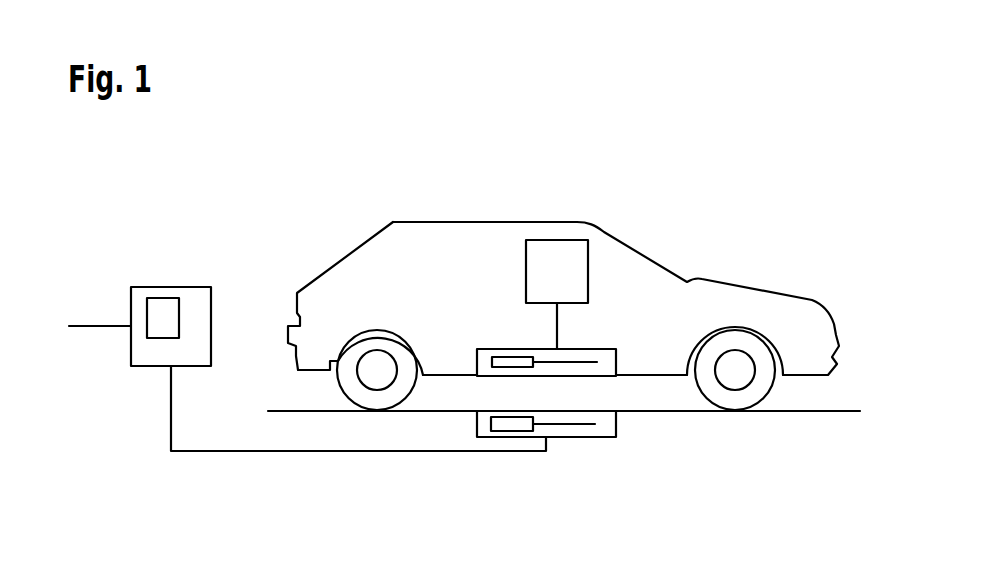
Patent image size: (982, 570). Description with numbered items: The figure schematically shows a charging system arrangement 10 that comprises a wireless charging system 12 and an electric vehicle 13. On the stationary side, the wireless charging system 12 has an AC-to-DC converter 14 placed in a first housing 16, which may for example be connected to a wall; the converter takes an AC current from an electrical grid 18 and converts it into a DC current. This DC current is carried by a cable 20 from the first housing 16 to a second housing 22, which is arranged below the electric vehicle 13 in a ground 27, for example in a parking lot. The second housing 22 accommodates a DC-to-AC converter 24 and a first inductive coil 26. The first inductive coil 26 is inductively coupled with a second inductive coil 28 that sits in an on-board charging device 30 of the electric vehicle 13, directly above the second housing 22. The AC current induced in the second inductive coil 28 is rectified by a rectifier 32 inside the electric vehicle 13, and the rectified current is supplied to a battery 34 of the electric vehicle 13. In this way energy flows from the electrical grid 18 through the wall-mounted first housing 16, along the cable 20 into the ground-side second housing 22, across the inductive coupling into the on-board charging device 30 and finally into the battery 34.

The charging system arrangement 10 is at (713, 191).
The wireless charging system 12 is at (178, 213).
The electric vehicle 13 is at (461, 221).
The AC-to-DC converter 14 is at (163, 298).
The first housing 16 is at (212, 300).
The electrical grid 18 is at (92, 326).
The cable 20 is at (220, 452).
The second housing 22 is at (605, 438).
The DC-to-AC converter 24 is at (477, 423).
The first inductive coil 26 is at (572, 425).
The ground 27 is at (792, 412).
The second inductive coil 28 is at (597, 362).
The on-board charging device 30 is at (595, 349).
The rectifier 32 is at (477, 363).
The battery 34 is at (556, 240).